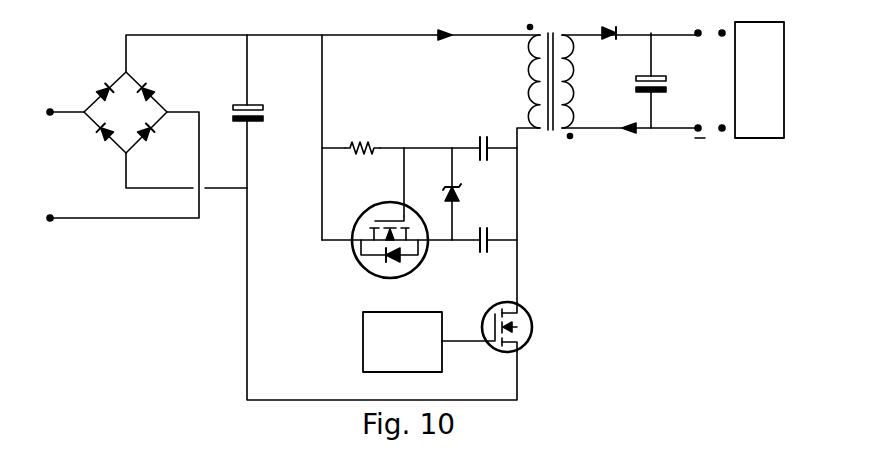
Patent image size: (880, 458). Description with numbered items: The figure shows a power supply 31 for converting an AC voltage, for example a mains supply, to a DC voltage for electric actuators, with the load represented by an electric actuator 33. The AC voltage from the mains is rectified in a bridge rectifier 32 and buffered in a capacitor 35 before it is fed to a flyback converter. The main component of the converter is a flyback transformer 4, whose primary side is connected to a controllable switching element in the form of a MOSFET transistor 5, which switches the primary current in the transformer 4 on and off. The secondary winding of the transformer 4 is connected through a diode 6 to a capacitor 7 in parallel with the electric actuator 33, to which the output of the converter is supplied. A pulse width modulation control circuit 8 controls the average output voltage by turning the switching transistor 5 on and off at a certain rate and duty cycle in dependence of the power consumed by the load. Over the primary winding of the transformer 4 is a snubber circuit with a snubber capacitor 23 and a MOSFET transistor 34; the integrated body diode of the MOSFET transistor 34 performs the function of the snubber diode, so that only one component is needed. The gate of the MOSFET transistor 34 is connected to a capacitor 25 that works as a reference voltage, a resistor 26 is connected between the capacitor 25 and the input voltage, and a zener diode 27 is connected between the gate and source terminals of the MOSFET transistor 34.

The flyback transformer 4 is at (527, 62).
The MOSFET transistor 5 is at (522, 347).
The diode 6 is at (607, 41).
The capacitor 7 is at (655, 78).
The pulse width modulation control circuit 8 is at (362, 357).
The snubber capacitor 23 is at (477, 248).
The capacitor 25 is at (478, 143).
The resistor 26 is at (357, 140).
The zener diode 27 is at (464, 193).
The power supply 31 is at (655, 263).
The bridge rectifier 32 is at (150, 89).
The electric actuator 33 is at (753, 140).
The MOSFET transistor 34 is at (368, 204).
The capacitor 35 is at (254, 109).